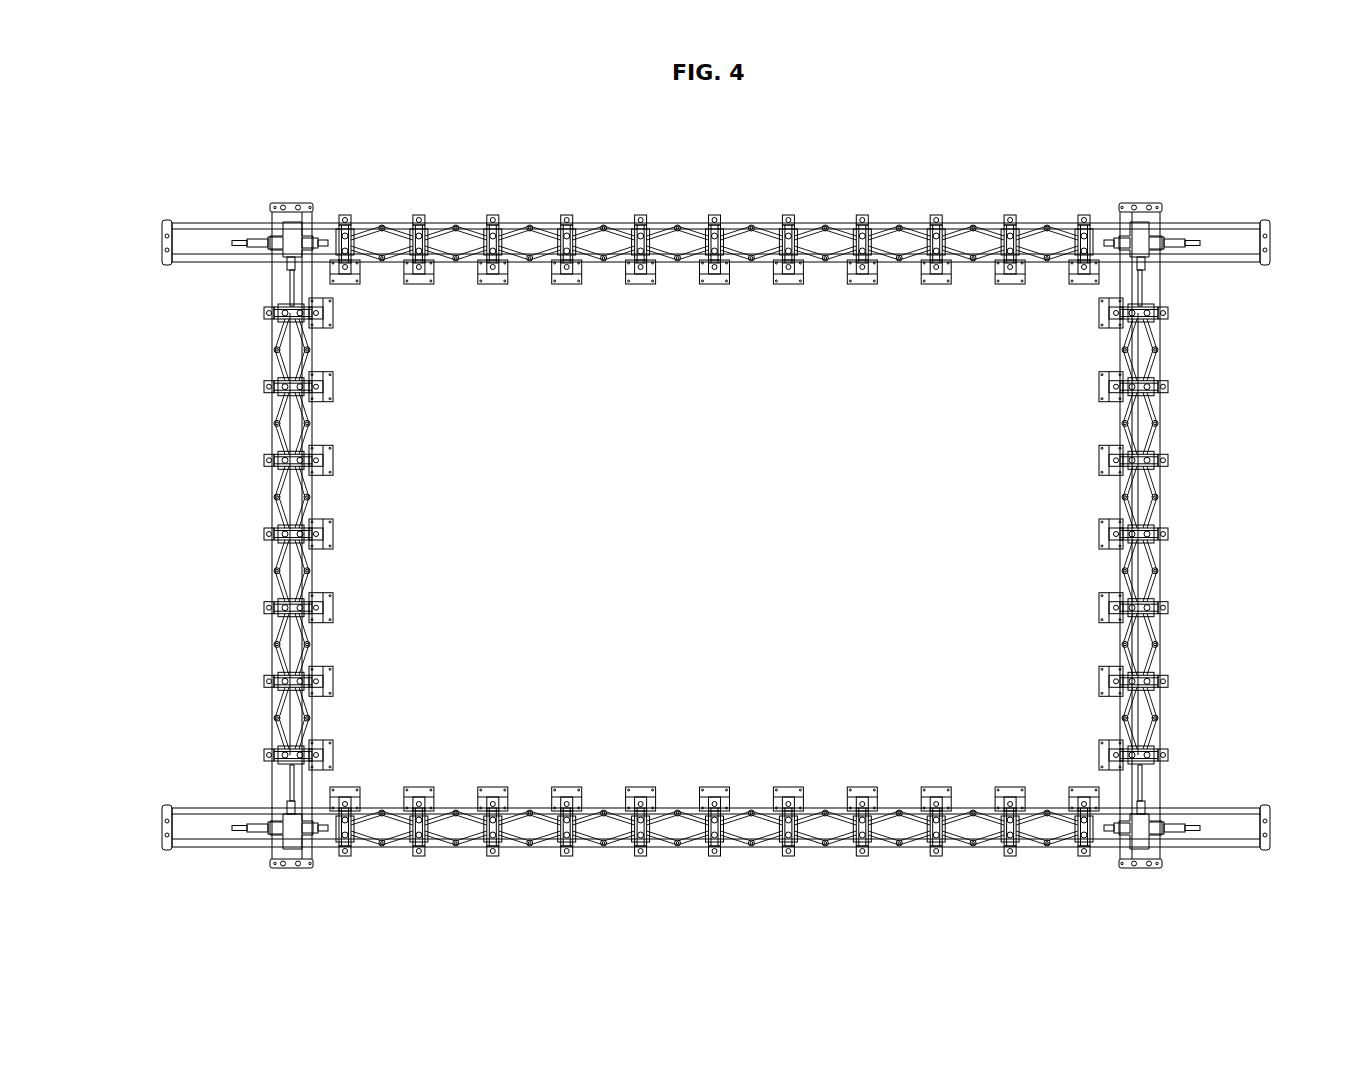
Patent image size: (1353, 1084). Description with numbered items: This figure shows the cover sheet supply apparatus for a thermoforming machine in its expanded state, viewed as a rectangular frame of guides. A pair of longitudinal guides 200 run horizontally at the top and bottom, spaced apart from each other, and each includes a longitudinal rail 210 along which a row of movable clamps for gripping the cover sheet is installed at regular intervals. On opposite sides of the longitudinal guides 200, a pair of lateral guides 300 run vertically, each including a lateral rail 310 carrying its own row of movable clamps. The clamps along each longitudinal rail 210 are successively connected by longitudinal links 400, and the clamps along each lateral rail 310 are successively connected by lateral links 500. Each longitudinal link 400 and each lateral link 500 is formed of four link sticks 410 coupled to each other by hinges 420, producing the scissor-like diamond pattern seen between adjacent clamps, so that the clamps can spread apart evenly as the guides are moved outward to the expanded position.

The longitudinal guide 200 is at (1245, 225).
The longitudinal rail 210 is at (1220, 243).
The lateral guide 300 is at (272, 775).
The lateral rail 310 is at (282, 674).
The longitudinal link 400 is at (595, 135).
The link stick 410 is at (525, 232).
The hinge 420 is at (530, 230).
The lateral link 500 is at (165, 378).